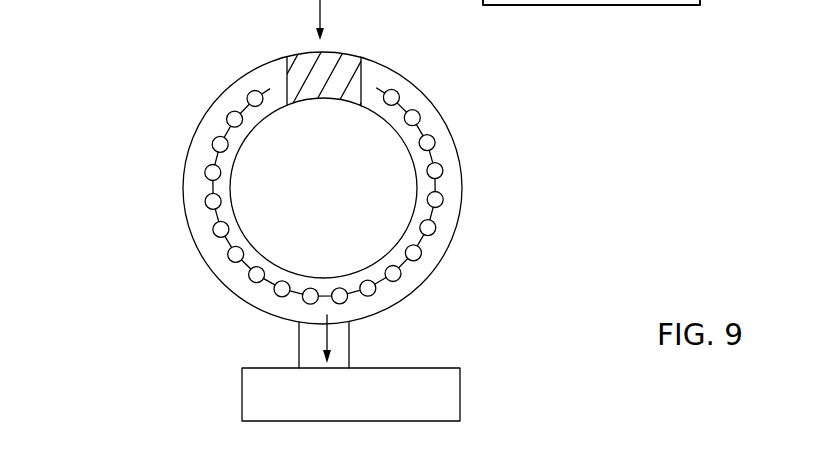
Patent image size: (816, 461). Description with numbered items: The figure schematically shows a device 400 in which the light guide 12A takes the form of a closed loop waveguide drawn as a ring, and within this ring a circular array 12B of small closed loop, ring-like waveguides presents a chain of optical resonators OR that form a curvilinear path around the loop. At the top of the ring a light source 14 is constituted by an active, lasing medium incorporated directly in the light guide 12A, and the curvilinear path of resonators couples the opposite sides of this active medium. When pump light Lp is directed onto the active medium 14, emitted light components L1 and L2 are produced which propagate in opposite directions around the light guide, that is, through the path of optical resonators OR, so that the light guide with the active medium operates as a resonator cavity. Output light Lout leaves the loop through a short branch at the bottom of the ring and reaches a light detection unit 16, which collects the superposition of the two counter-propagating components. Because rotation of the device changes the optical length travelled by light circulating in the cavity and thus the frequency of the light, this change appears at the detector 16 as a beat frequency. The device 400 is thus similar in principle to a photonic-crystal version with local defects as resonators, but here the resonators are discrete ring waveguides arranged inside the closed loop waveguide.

The device 400 is at (158, 137).
The light guide 12A is at (440, 112).
The array of closed loop waveguides 12B is at (352, 196).
The optical resonators OR is at (229, 267).
The light source 14 is at (335, 63).
The light detection unit 16 is at (462, 384).
The pump light Lp is at (318, 22).
The emitted light component L1 is at (374, 85).
The emitted light component L2 is at (270, 85).
The output light Lout is at (329, 334).